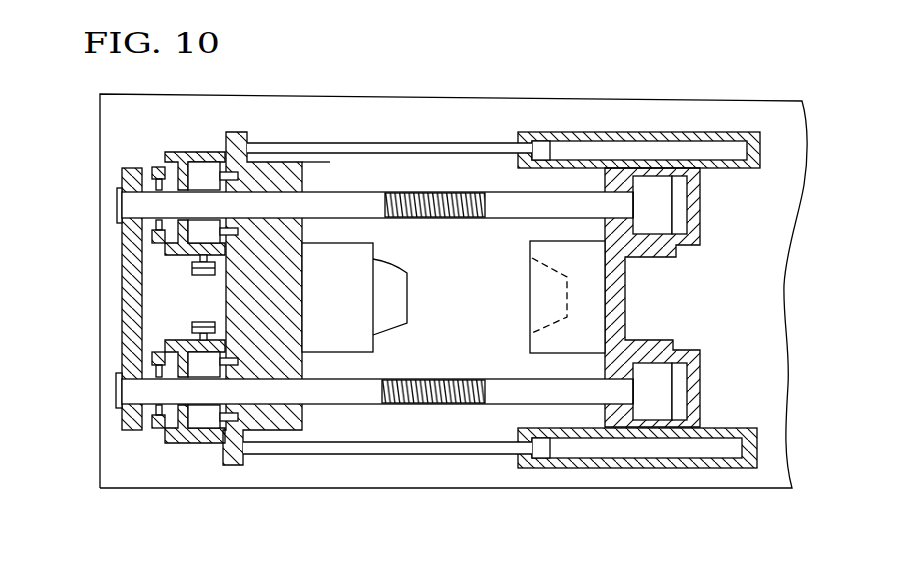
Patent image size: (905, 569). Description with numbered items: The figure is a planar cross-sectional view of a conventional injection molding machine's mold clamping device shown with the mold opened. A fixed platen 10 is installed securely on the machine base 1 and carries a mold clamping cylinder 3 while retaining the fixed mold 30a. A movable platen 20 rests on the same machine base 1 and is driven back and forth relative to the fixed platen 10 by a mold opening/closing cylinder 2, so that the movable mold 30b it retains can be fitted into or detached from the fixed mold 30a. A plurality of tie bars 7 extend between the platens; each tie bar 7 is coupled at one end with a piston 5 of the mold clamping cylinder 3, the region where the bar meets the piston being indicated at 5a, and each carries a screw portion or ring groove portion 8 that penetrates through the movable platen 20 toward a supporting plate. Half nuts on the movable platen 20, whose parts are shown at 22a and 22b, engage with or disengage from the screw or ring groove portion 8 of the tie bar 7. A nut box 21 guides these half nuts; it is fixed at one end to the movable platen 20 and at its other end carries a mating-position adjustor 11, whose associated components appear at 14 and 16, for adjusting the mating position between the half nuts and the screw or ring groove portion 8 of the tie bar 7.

The machine base 1 is at (703, 116).
The mold opening/closing cylinder 2 is at (737, 150).
The mold clamping cylinder 3 is at (678, 222).
The piston 5 is at (658, 188).
The motor output shaft 5a is at (638, 225).
The tie bar 7 is at (507, 205).
The screw portion or ring groove portion 8 is at (407, 192).
The fixed platen 10 is at (638, 252).
The mating-position adjustor 11 is at (152, 258).
The adjustment space 14 is at (198, 276).
The fixing screw 16 is at (188, 256).
The movable platen 20 is at (272, 188).
The nut box 21 is at (177, 152).
The bearing outer ring 22a is at (150, 245).
The bearing 22b is at (204, 178).
The fixed mold 30a is at (553, 306).
The movable mold 30b is at (386, 278).